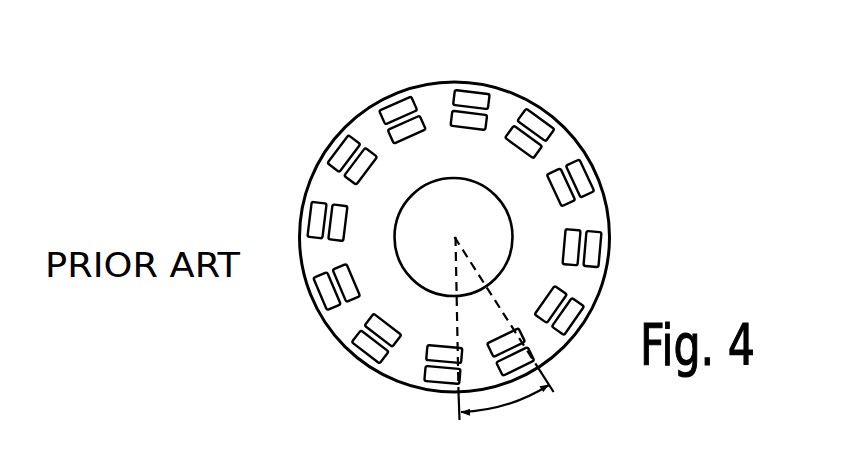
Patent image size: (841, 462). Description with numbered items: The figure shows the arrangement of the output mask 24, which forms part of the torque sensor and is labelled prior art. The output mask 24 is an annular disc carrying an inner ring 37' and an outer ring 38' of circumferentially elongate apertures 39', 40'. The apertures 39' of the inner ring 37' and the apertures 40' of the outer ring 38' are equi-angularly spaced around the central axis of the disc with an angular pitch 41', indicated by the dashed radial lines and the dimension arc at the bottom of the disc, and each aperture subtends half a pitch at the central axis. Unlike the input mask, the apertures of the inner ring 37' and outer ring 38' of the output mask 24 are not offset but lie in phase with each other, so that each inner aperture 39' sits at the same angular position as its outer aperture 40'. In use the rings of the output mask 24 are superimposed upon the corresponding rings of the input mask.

The output mask 24 is at (375, 298).
The inner ring 37' is at (409, 83).
The outer ring 38' is at (502, 75).
The apertures 39' is at (621, 244).
The apertures 40' is at (570, 105).
The angular pitch 41' is at (522, 343).